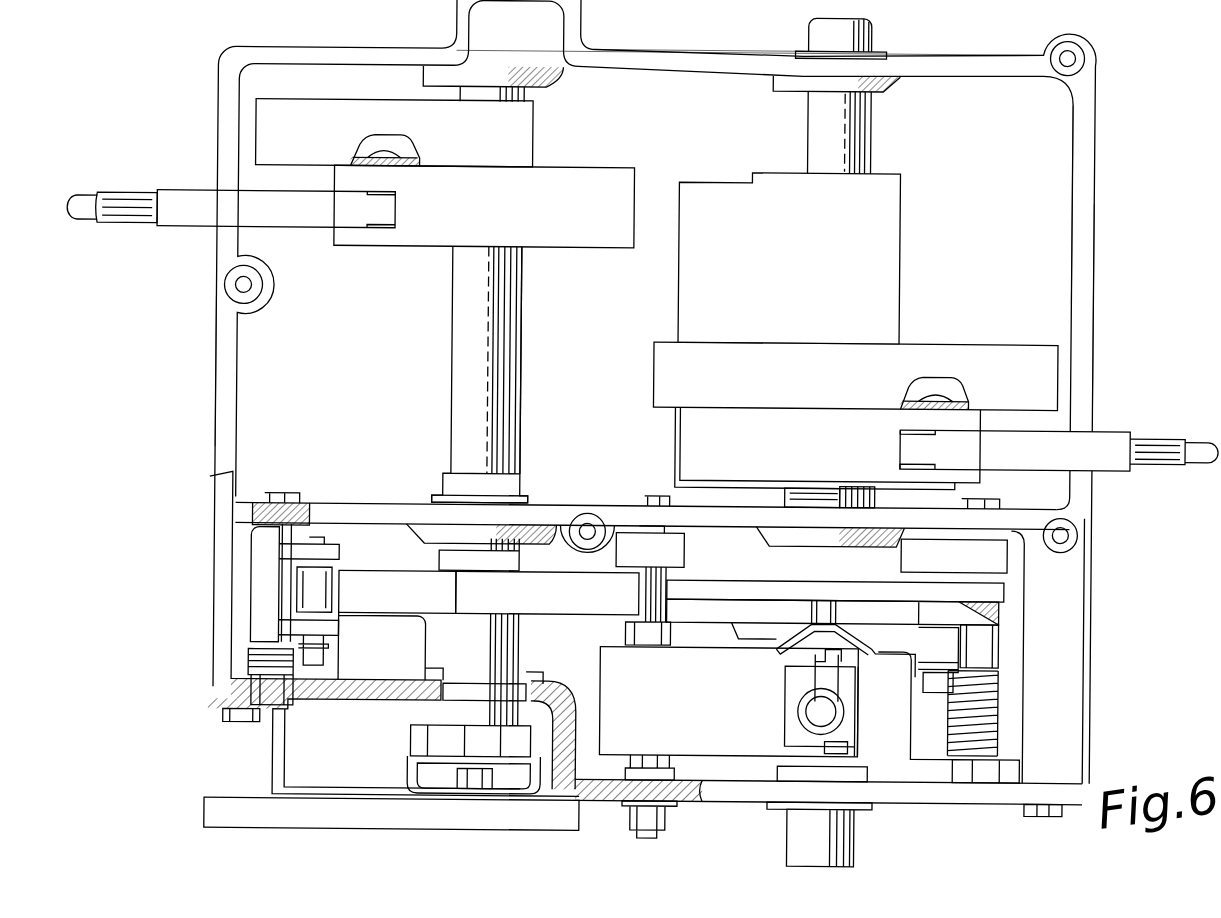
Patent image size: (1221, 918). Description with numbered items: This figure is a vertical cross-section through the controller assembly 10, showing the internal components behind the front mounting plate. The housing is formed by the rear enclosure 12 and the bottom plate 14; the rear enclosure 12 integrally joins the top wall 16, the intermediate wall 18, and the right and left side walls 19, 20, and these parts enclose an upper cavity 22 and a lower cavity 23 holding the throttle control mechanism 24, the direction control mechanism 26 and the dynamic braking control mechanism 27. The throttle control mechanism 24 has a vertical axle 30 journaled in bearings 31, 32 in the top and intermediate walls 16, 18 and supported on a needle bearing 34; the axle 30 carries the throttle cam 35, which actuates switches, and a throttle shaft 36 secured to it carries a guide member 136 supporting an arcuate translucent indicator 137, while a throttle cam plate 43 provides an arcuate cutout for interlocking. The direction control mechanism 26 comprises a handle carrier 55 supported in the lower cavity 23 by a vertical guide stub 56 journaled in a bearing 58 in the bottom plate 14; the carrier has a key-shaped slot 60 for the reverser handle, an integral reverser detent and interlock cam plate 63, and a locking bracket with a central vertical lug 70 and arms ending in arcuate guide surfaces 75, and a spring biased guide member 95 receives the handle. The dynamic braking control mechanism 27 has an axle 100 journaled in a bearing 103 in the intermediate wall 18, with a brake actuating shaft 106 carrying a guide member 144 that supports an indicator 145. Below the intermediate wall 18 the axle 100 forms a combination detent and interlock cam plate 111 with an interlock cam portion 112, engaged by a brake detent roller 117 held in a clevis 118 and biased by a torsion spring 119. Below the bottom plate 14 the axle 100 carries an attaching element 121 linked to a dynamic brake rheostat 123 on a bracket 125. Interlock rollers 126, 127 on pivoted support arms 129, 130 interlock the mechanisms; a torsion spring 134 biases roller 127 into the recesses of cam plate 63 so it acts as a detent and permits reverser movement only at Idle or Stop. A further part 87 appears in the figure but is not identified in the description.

The controller assembly 10 is at (1105, 80).
The rear enclosure 12 is at (1100, 218).
The bottom plate 14 is at (958, 797).
The top wall 16 is at (693, 60).
The intermediate wall 18 is at (348, 508).
The right side wall 19 is at (1088, 277).
The left side wall 20 is at (212, 357).
The upper cavity 22 is at (1060, 156).
The lower cavity 23 is at (1012, 643).
The throttle control mechanism 24 is at (912, 310).
The direction control mechanism 26 is at (918, 742).
The dynamic braking control mechanism 27 is at (448, 337).
The axle 30 is at (866, 150).
The bearing 31 is at (882, 55).
The bearing 32 is at (876, 495).
The needle bearing 34 is at (785, 495).
The throttle cam 35 is at (890, 250).
The throttle shaft 36 is at (1107, 440).
The throttle cam plate 43 is at (995, 590).
The handle carrier 55 is at (805, 723).
The vertical guide stub 56 is at (805, 835).
The bearing 58 is at (880, 780).
The key-shaped slot 60 is at (802, 704).
The reverser detent and interlock cam plate 63 is at (738, 608).
The central vertical lug 70 is at (822, 610).
The arcuate guide surfaces 75 is at (895, 745).
The contact spring arm 87 is at (805, 648).
The spring biased guide member 95 is at (620, 672).
The axle 100 is at (508, 300).
The bearing 103 is at (530, 495).
The brake actuating shaft 106 is at (185, 197).
The combination detent and interlock cam plate 111 is at (412, 585).
The interlock cam portion 112 is at (568, 605).
The brake detent roller 117 is at (318, 598).
The clevis 118 is at (258, 600).
The torsion spring 119 is at (258, 668).
The attaching element 121 is at (422, 745).
The dynamic brake rheostat 123 is at (548, 822).
The bracket 125 is at (275, 745).
The interlock roller 126 is at (660, 590).
The interlock roller 127 is at (978, 608).
The support arm 129 is at (677, 550).
The support arm 130 is at (1000, 532).
The torsion spring 134 is at (1000, 705).
The guide member 136 is at (693, 430).
The arcuate translucent indicator 137 is at (1055, 380).
The guide member 144 is at (590, 178).
The indicator 145 is at (335, 113).